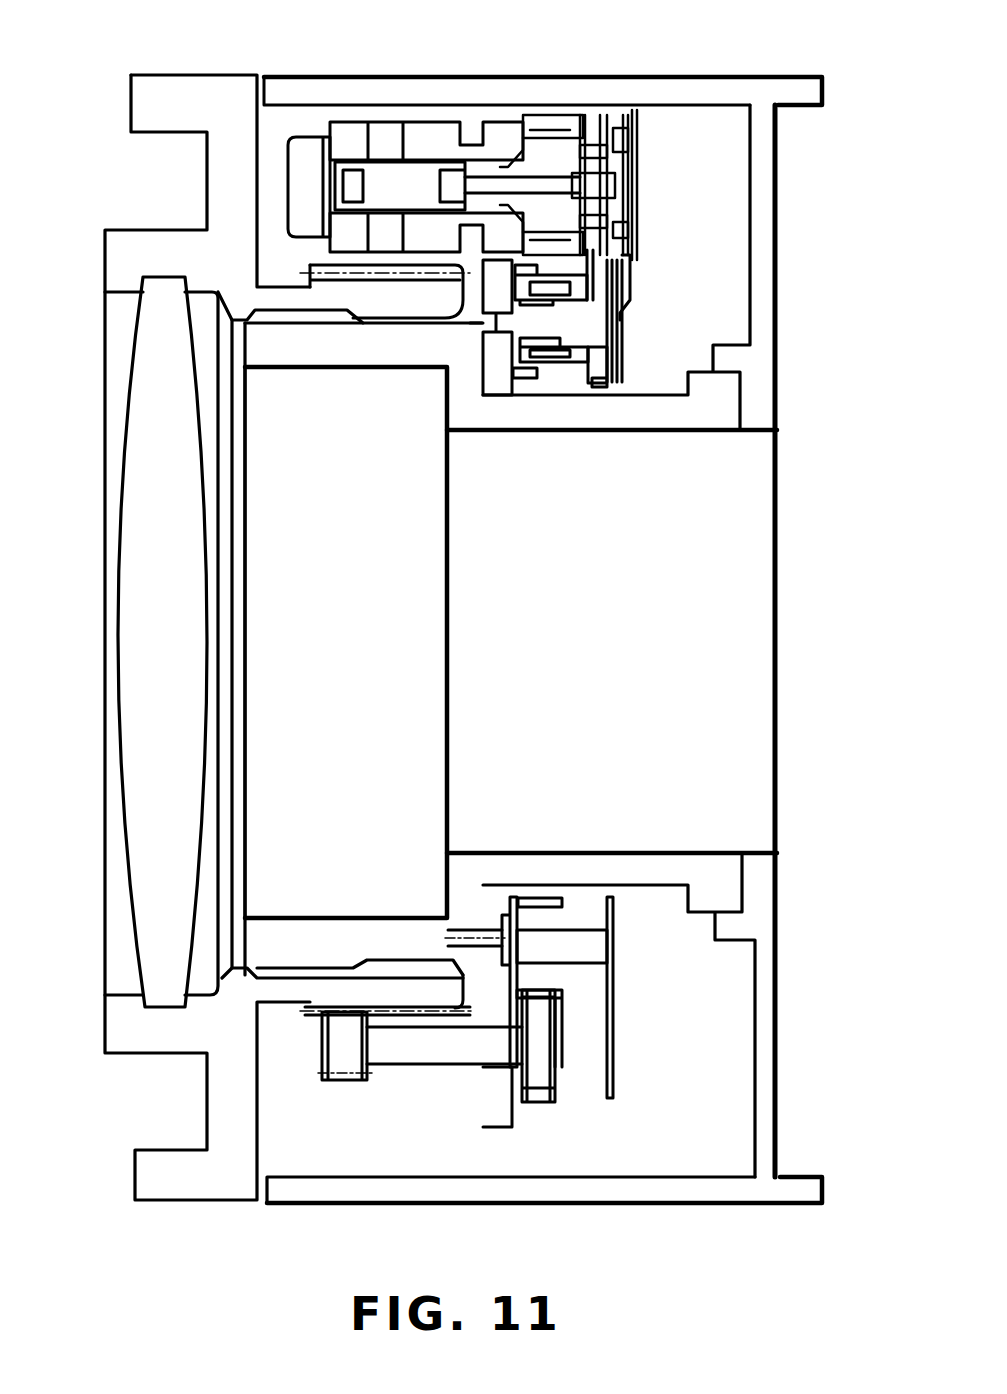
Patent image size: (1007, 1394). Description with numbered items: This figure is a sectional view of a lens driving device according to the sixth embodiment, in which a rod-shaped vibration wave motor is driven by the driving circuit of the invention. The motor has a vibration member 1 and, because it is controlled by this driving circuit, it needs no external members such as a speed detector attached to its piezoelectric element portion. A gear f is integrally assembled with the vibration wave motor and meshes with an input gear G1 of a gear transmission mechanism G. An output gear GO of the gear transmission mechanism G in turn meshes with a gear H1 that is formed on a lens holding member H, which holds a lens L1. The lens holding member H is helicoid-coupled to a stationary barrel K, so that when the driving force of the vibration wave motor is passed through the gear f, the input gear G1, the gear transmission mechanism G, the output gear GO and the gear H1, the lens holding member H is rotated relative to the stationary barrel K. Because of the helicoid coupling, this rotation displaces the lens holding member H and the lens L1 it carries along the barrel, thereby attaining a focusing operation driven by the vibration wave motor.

The vibration member 1 is at (389, 133).
The gear f is at (597, 133).
The gear transmission mechanism G is at (632, 316).
The input gear G1 is at (600, 363).
The lens L1 is at (140, 833).
The stationary barrel K is at (317, 935).
The gear H1 is at (310, 1015).
The output gear GO is at (330, 1082).
The lens holding member H is at (160, 1185).